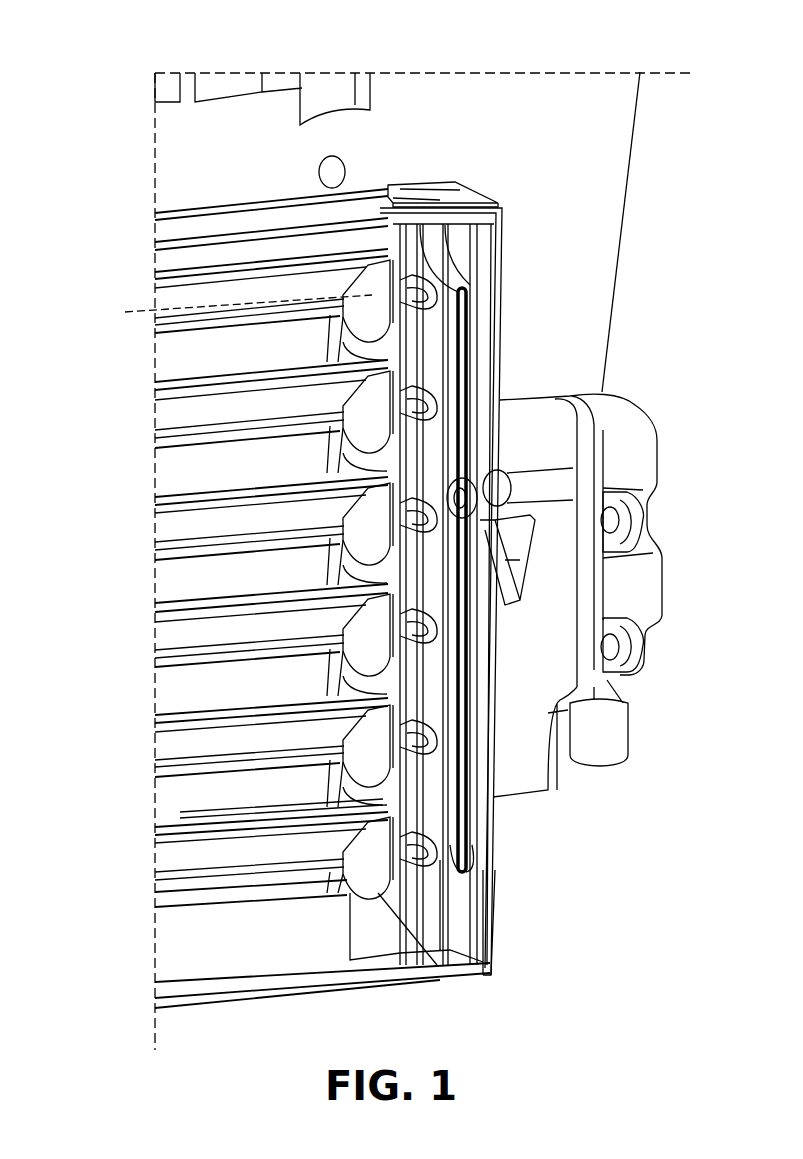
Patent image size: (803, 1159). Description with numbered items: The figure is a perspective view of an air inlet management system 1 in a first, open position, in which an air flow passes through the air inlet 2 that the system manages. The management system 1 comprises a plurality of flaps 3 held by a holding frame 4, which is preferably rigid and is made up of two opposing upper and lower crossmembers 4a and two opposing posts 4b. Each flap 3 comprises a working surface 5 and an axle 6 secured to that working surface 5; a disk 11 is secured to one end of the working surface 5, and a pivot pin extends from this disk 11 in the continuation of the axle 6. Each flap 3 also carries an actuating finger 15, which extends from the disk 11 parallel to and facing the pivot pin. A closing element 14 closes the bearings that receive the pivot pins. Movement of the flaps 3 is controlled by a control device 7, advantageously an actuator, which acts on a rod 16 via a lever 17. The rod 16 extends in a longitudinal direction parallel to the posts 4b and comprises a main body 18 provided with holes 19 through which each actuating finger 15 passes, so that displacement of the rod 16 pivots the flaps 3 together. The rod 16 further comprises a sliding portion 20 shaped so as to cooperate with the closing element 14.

The management system 1 is at (70, 535).
The air inlet 2 is at (188, 690).
The flap 3 is at (372, 878).
The holding frame 4 is at (505, 846).
The crossmember 4a is at (190, 233).
The post 4b is at (492, 953).
The working surface 5 is at (190, 322).
The axle 6 is at (182, 307).
The control device 7 is at (667, 573).
The disk 11 is at (380, 293).
The closing element 14 is at (448, 184).
The actuating finger 15 is at (428, 412).
The rod 16 is at (477, 325).
The lever 17 is at (538, 462).
The main body 18 is at (468, 857).
The hole 19 is at (470, 285).
The sliding portion 20 is at (460, 847).